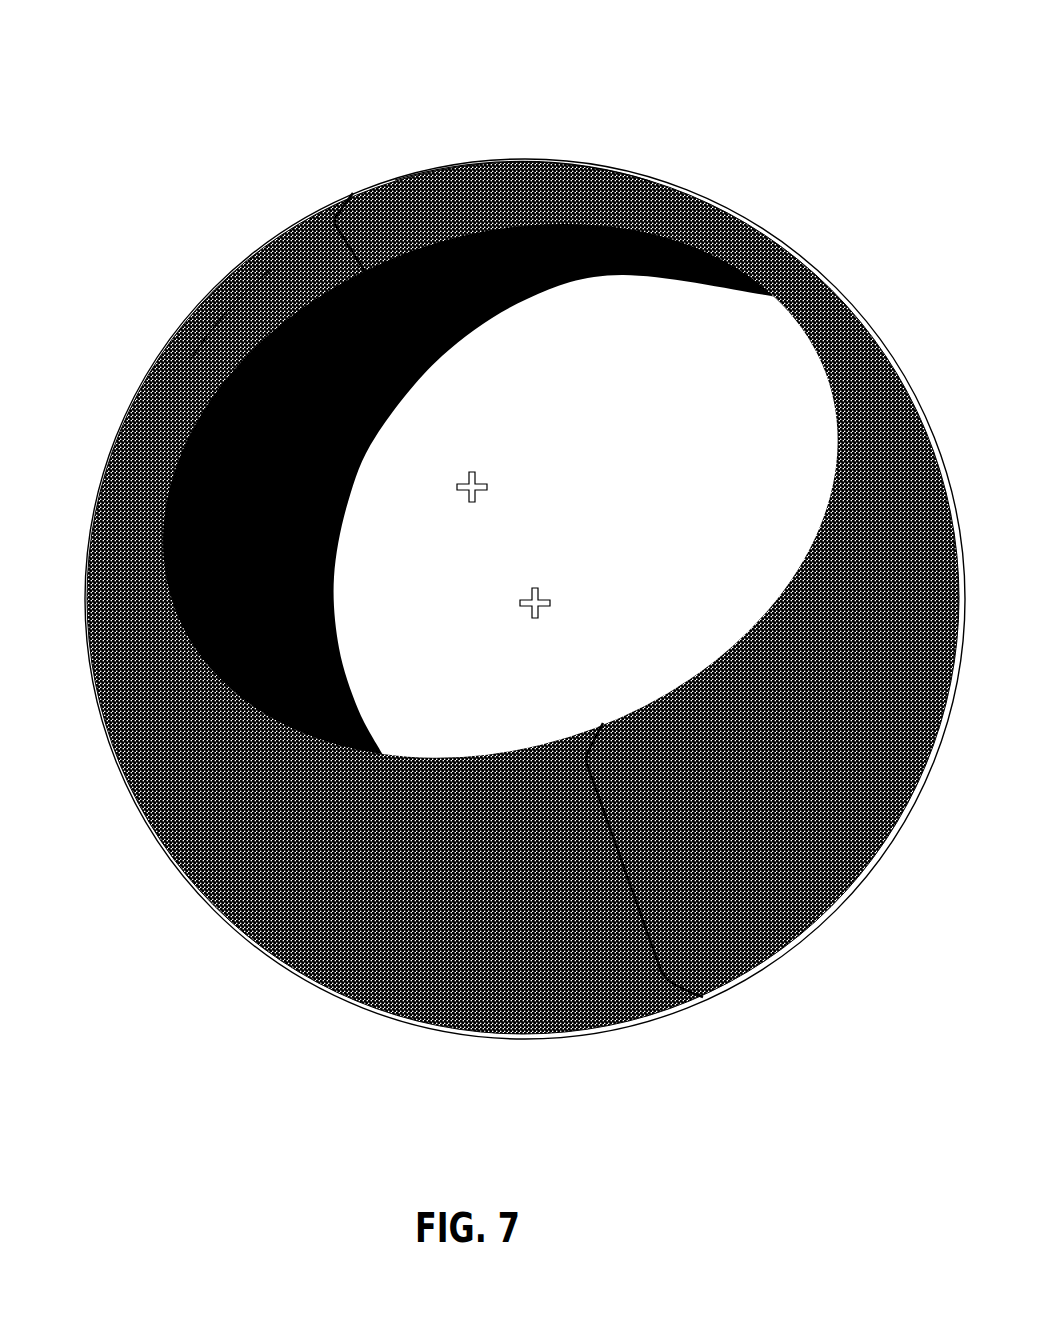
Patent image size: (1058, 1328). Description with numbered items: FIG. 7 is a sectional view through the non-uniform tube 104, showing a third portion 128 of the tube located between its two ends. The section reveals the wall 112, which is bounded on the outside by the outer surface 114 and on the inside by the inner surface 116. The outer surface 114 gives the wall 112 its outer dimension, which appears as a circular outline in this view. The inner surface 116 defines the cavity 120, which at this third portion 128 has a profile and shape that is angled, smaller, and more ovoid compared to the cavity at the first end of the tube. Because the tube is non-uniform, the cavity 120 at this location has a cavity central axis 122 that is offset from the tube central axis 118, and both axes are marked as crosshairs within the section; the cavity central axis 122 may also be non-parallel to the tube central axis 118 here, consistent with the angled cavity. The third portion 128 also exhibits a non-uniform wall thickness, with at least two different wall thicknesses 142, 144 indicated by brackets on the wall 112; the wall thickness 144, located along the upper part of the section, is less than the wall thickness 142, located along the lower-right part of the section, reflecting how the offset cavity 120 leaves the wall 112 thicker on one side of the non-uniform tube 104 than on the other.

The non-uniform tube 104 is at (90, 165).
The wall 112 is at (225, 343).
The outer surface 114 is at (418, 160).
The inner surface 116 is at (328, 457).
The tube central axis 118 is at (536, 600).
The cavity 120 is at (745, 368).
The cavity central axis 122 is at (472, 482).
The third portion 128 is at (593, 113).
The wall thickness 142 is at (625, 872).
The wall thickness 144 is at (347, 250).